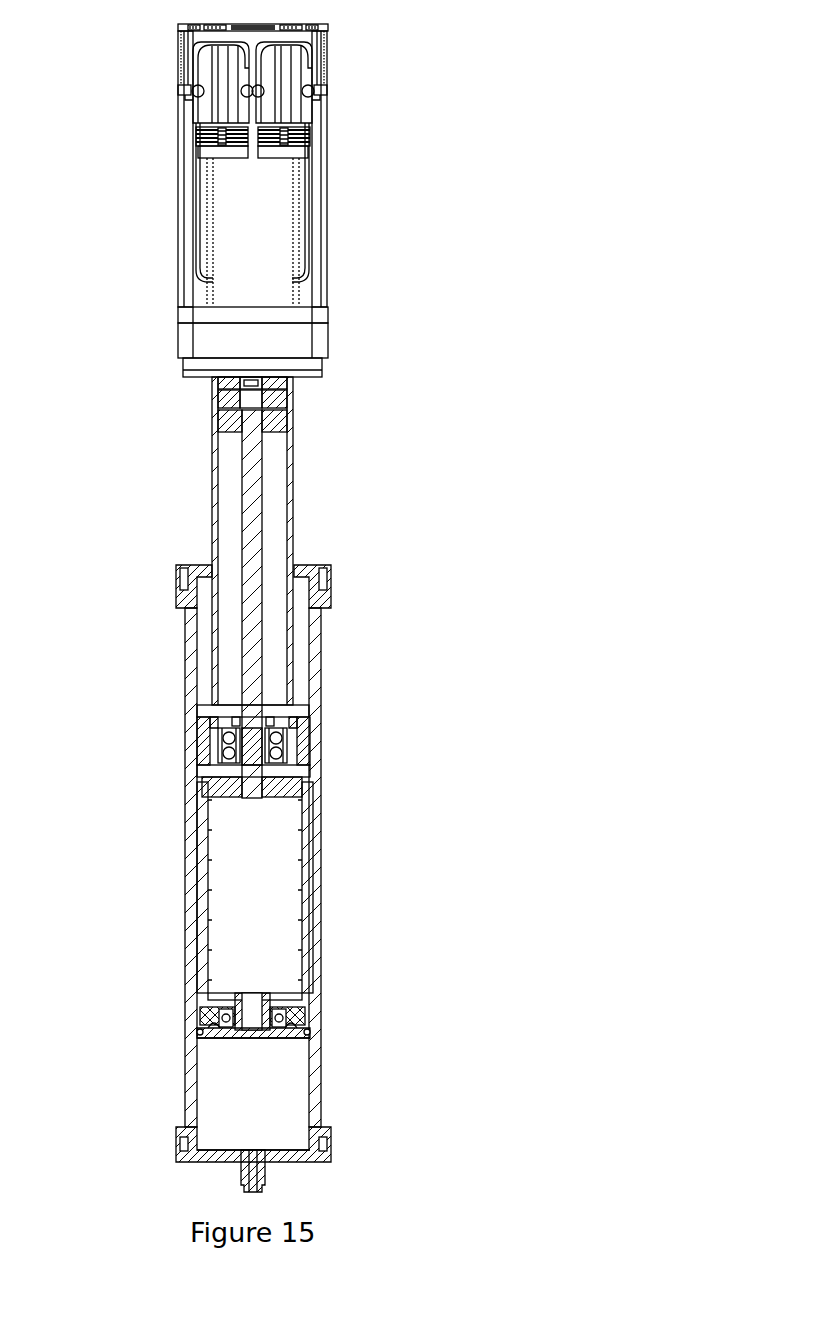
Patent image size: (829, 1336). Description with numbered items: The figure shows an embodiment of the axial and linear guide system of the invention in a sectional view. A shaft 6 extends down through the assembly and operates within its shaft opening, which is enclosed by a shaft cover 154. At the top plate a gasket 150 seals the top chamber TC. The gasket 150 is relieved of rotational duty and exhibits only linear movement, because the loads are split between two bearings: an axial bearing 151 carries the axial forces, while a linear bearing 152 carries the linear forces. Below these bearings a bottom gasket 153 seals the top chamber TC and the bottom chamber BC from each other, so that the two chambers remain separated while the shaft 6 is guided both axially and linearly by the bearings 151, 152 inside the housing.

The shaft 6 is at (240, 466).
The shaft cover 154 is at (213, 522).
The gasket 150 is at (207, 574).
The top chamber TC is at (296, 653).
The linear bearing 152 is at (198, 735).
The axial bearing 151 is at (276, 742).
The bottom gasket 153 is at (197, 1030).
The bottom chamber BC is at (283, 1080).